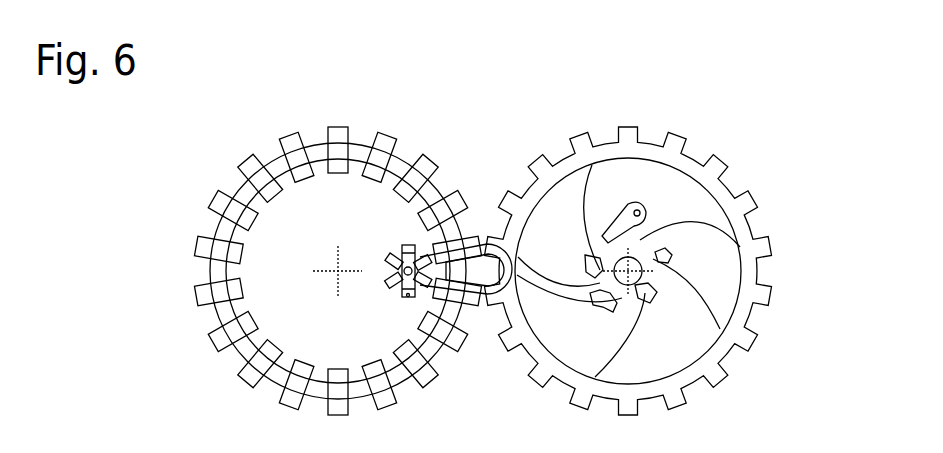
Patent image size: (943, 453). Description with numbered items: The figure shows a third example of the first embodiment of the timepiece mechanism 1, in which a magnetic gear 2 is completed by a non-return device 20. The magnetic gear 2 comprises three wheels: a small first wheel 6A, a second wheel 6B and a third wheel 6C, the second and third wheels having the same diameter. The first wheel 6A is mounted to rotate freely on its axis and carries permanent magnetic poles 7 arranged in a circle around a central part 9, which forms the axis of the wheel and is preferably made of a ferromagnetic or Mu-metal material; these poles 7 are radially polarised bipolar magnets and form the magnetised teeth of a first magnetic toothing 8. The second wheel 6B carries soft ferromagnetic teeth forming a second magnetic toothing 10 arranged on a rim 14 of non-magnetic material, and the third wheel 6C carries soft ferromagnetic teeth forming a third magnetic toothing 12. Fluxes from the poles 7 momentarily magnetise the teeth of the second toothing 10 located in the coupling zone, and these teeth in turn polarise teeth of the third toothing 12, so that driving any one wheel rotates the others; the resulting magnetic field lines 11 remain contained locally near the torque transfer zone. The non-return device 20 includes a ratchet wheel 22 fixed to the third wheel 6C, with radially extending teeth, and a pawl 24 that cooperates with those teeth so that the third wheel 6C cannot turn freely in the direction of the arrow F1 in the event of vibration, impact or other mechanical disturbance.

The mechanism 1 is at (122, 205).
The magnetic gear 2 is at (175, 186).
The first wheel 6A is at (372, 312).
The second wheel 6B is at (314, 122).
The third wheel 6C is at (654, 122).
The permanent magnetic poles 7 is at (400, 245).
The first magnetic toothing 8 is at (369, 285).
The central part 9 is at (405, 297).
The second magnetic toothing 10 is at (217, 341).
The magnetic field lines 11 is at (518, 263).
The third magnetic toothing 12 is at (750, 200).
The rim 14 is at (349, 143).
The non-return device 20 is at (655, 322).
The ratchet wheel 22 is at (677, 251).
The pawl 24 is at (630, 237).
The arrow F1 is at (712, 60).